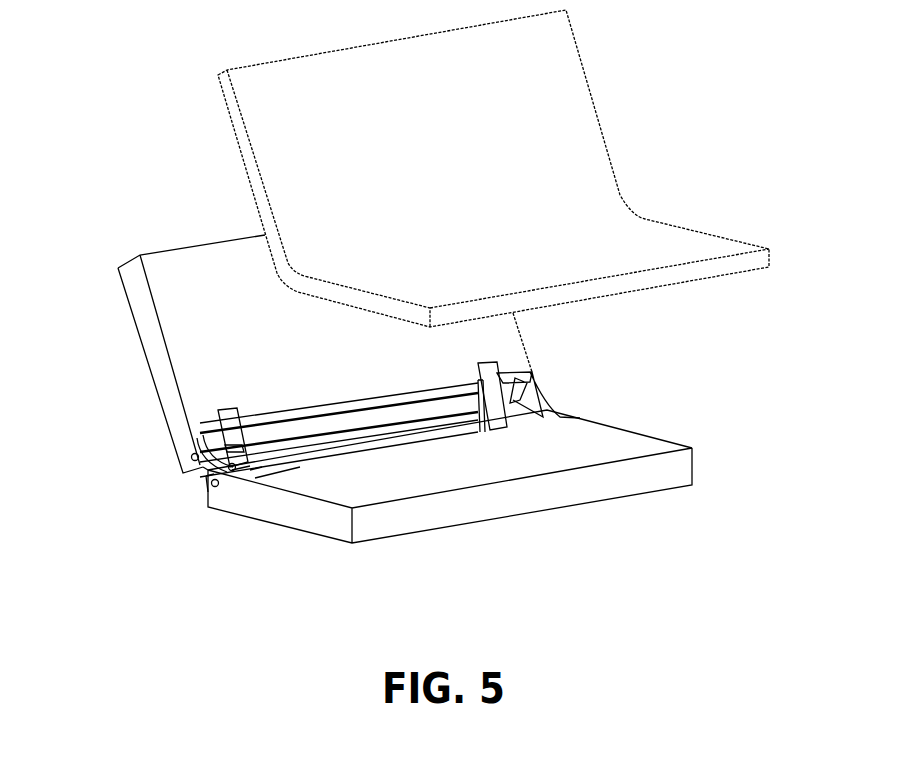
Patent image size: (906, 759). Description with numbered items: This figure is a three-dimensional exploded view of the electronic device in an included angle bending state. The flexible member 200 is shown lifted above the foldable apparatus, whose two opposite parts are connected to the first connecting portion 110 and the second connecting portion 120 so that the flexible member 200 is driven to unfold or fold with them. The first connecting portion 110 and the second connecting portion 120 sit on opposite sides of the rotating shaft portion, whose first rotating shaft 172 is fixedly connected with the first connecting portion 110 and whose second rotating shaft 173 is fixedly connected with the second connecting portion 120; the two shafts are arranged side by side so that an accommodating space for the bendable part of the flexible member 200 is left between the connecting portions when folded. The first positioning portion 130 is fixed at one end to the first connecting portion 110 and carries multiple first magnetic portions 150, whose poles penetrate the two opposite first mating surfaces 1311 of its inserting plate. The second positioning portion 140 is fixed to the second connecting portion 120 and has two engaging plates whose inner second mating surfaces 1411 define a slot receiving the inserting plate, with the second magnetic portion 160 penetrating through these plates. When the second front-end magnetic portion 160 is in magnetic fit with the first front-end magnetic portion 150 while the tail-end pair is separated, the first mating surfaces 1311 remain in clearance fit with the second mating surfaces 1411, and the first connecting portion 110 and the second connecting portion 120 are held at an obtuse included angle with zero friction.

The flexible member 200 is at (570, 65).
The first connecting portion 110 is at (178, 294).
The second connecting portion 120 is at (512, 467).
The first positioning portion 130 is at (222, 418).
The first mating surfaces 1311 is at (228, 445).
The first rotating shaft 172 is at (191, 457).
The first magnetic portions 150 is at (203, 472).
The second rotating shaft 173 is at (210, 478).
The second magnetic portion 160 is at (240, 482).
The second positioning portion 140 is at (285, 490).
The second mating surfaces 1411 is at (253, 488).